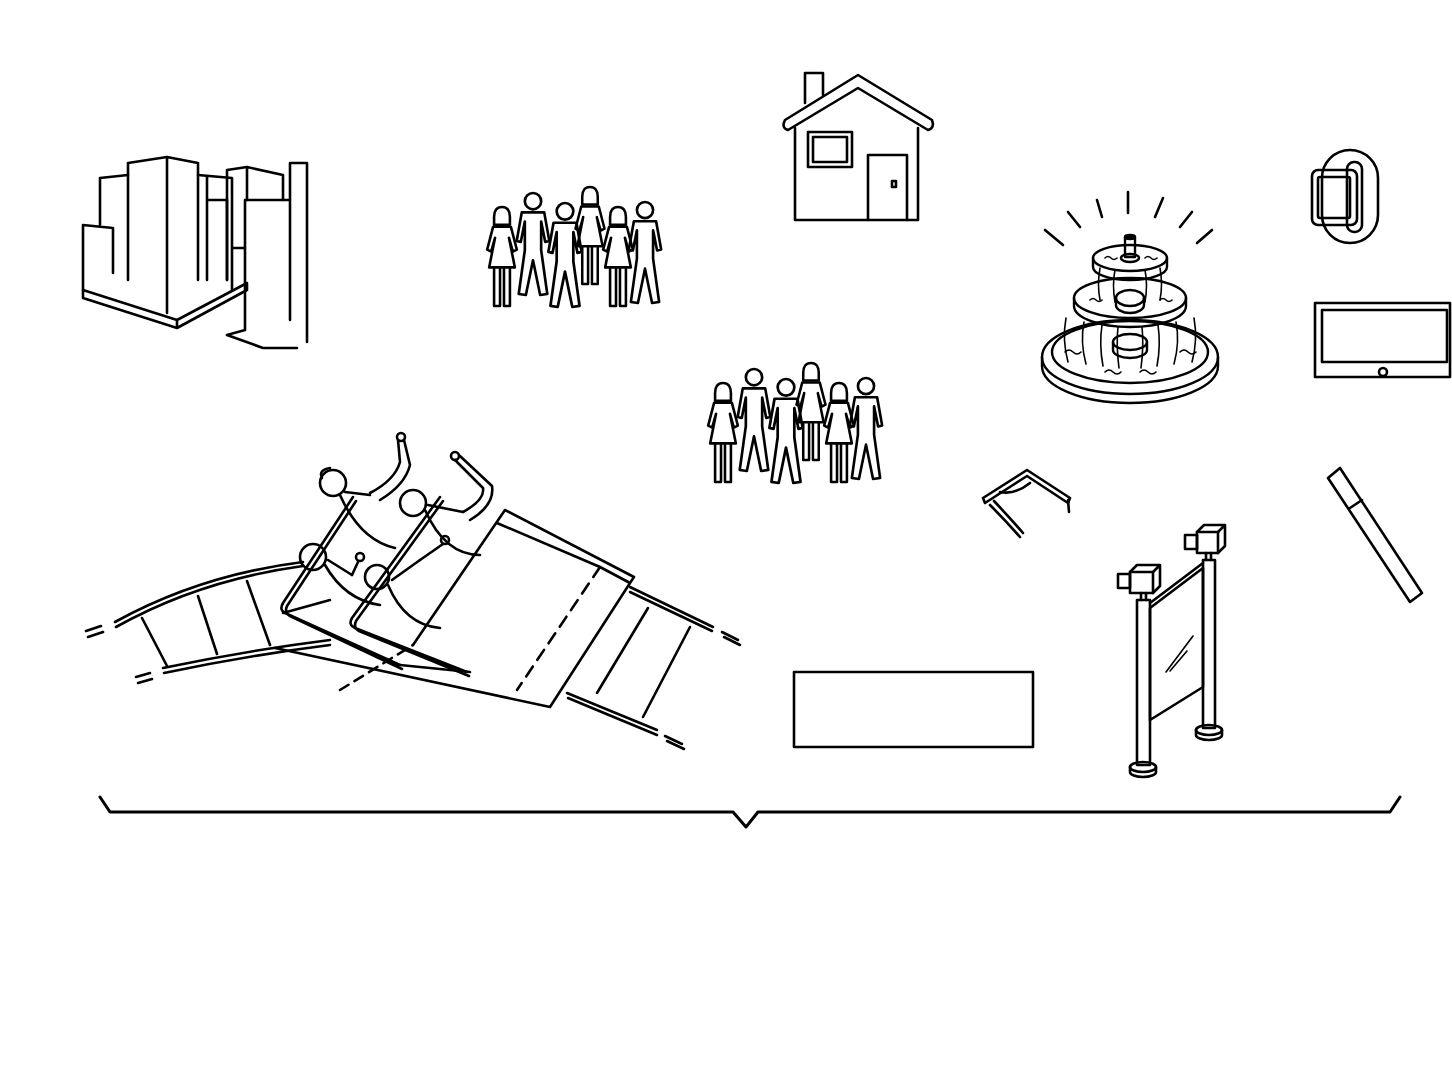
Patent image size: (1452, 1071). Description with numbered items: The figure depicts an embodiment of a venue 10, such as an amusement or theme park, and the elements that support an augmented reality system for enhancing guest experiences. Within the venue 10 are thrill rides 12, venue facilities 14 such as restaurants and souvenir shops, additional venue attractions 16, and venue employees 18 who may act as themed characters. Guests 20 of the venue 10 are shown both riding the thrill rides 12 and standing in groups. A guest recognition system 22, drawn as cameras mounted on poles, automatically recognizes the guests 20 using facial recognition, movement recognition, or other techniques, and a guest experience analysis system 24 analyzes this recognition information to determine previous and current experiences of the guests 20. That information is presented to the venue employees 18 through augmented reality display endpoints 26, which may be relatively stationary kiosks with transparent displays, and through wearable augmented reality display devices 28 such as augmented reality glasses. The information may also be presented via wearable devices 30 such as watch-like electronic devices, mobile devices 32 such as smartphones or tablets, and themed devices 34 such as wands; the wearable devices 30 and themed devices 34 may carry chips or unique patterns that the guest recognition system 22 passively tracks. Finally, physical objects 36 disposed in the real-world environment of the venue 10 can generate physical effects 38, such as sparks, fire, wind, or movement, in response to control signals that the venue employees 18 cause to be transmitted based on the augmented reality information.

The venue 10 is at (1212, 78).
The thrill rides 12 is at (220, 484).
The venue facilities 14 is at (148, 165).
The additional venue attractions 16 is at (770, 70).
The venue employees 18 is at (460, 210).
The guests 20 is at (686, 383).
The guest recognition system 22 is at (1203, 528).
The guest experience analysis system 24 is at (912, 672).
The augmented reality display endpoints 26 is at (1198, 670).
The wearable augmented reality display devices 28 is at (1066, 465).
The wearable devices 30 is at (1381, 150).
The mobile devices 32 is at (1338, 297).
The themed devices 34 is at (1318, 462).
The physical objects 36 is at (1030, 262).
The physical effects 38 is at (1176, 207).